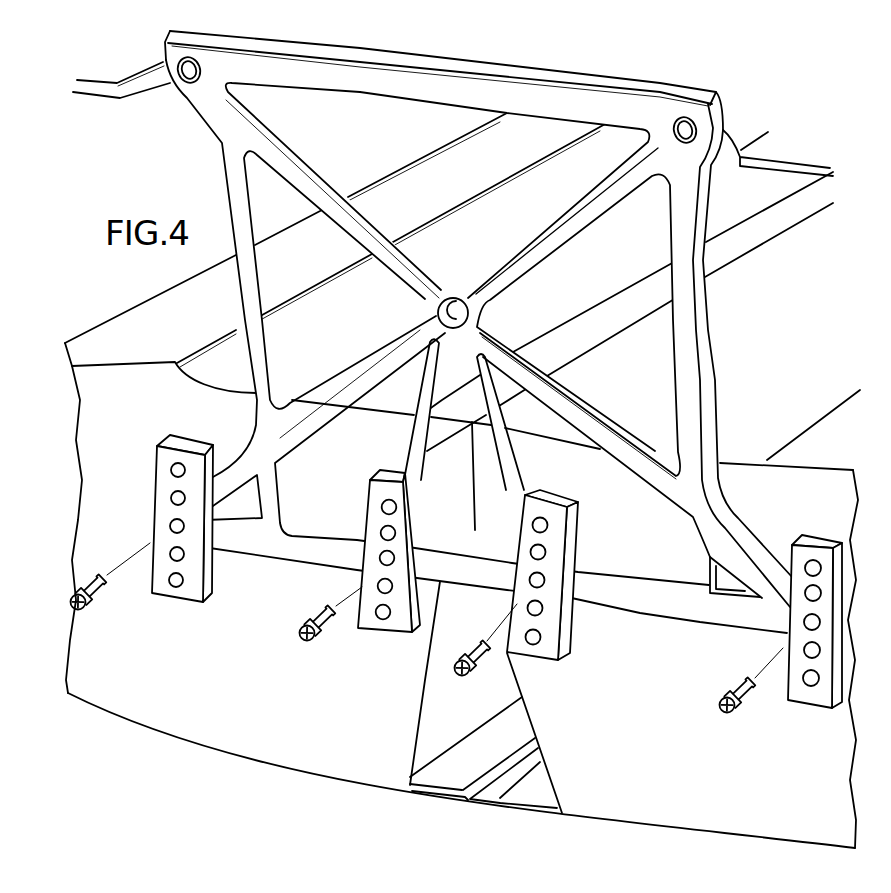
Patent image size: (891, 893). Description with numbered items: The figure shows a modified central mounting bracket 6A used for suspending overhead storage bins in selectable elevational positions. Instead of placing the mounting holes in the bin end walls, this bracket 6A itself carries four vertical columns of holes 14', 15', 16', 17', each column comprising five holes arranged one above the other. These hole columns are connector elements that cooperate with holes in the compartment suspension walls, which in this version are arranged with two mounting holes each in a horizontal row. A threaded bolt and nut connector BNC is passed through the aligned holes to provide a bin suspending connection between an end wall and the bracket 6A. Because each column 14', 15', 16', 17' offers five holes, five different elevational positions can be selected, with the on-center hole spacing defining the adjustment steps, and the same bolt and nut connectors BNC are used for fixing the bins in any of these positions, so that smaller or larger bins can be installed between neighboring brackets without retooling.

The modified mounting bracket 6A is at (707, 373).
The vertical column of holes 17' is at (182, 540).
The vertical column of holes 16' is at (389, 573).
The vertical column of holes 15' is at (546, 601).
The vertical column of holes 14' is at (812, 645).
The bolt and nut connector BNC is at (740, 732).